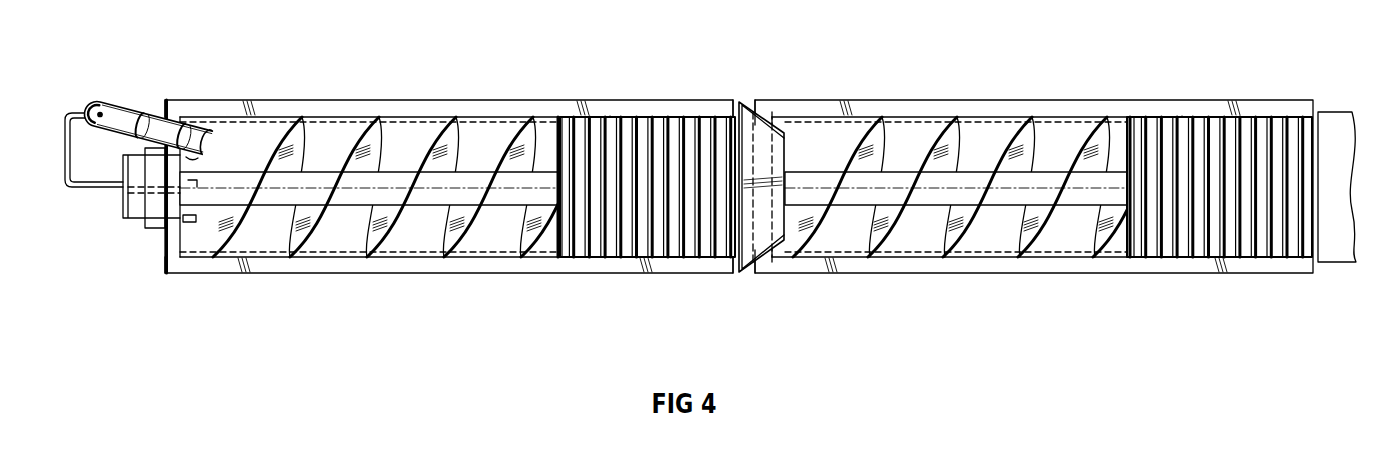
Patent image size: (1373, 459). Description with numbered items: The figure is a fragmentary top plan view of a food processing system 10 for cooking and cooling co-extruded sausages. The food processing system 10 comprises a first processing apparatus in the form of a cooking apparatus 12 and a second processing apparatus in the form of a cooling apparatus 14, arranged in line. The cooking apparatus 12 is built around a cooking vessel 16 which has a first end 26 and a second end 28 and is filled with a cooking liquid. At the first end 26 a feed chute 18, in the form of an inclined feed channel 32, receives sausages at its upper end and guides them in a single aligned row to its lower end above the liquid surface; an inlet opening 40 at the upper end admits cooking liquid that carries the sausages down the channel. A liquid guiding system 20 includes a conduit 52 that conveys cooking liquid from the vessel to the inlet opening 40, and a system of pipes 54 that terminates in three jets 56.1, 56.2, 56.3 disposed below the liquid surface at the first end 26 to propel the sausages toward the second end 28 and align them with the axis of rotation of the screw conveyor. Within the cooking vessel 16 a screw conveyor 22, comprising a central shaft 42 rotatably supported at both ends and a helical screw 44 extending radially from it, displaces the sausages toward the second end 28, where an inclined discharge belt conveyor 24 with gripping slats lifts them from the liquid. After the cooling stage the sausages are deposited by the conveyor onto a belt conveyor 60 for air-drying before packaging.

The food processing system 10 is at (621, 84).
The cooking apparatus 12 is at (280, 86).
The cooling apparatus 14 is at (821, 87).
The cooking vessel 16 is at (606, 266).
The feed chute 18 is at (153, 98).
The liquid guiding system 20 is at (121, 227).
The screw conveyor 22 is at (682, 184).
The discharge belt conveyor 24 is at (666, 128).
The first end 26 is at (160, 243).
The second end 28 is at (742, 98).
The inclined feed channel 32 is at (118, 105).
The inlet opening 40 is at (95, 109).
The central shaft 42 is at (813, 182).
The helical screw 44 is at (879, 160).
The conduit 52 is at (67, 186).
The system of pipes 54 is at (121, 200).
The jet 56.1 is at (191, 224).
The jet 56.2 is at (198, 183).
The jet 56.3 is at (190, 158).
The belt conveyor 60 is at (1330, 125).